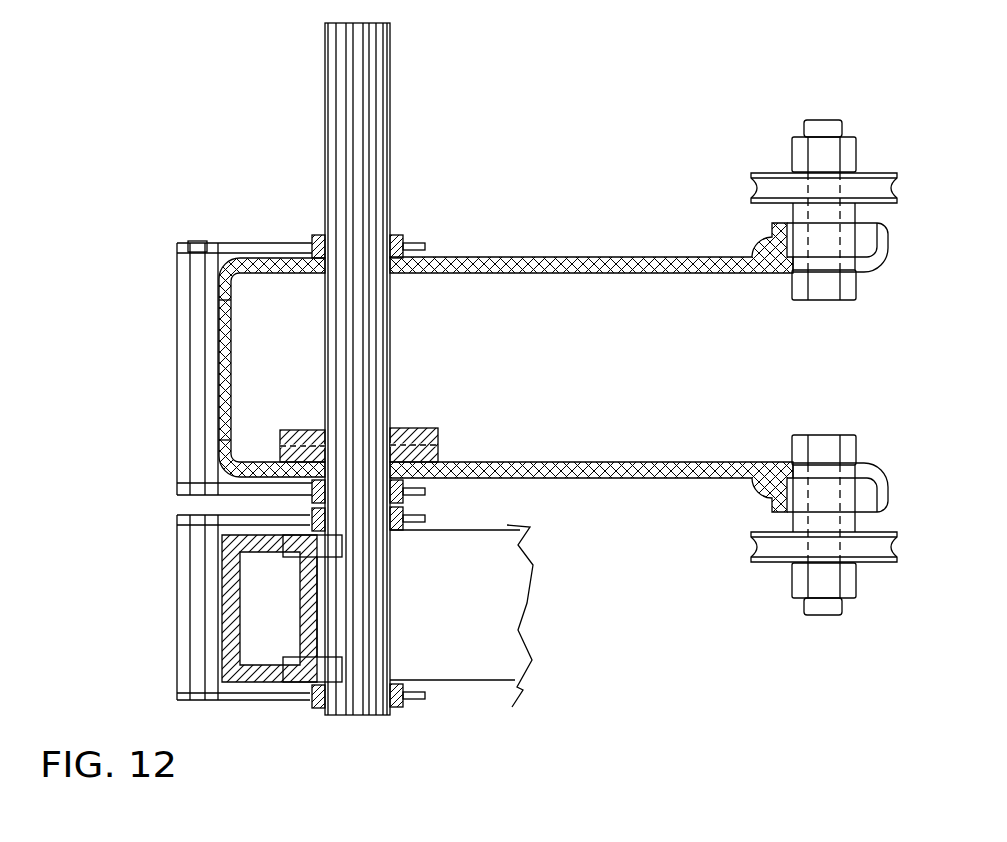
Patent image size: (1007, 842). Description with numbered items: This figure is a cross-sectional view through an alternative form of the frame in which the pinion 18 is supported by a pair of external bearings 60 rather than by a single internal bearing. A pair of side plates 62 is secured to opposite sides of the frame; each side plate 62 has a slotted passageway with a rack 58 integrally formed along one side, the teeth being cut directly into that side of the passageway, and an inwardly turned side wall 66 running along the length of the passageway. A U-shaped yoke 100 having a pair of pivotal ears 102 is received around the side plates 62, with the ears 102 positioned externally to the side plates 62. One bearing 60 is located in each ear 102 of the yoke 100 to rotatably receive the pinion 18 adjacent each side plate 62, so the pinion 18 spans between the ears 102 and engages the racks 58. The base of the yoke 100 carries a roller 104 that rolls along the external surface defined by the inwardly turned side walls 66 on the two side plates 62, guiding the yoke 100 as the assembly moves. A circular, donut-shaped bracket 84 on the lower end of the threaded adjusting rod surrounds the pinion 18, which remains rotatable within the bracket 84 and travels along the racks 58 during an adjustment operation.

The U-shaped yoke 100 is at (190, 196).
The pivotal ears 102 is at (303, 242).
The roller 104 is at (177, 372).
The rack 58 is at (312, 256).
The side wall 66 is at (225, 303).
The donut-shaped bracket 84 is at (295, 432).
The bearing 60 is at (403, 233).
The side plate 62 is at (593, 260).
The pinion 18 is at (368, 338).